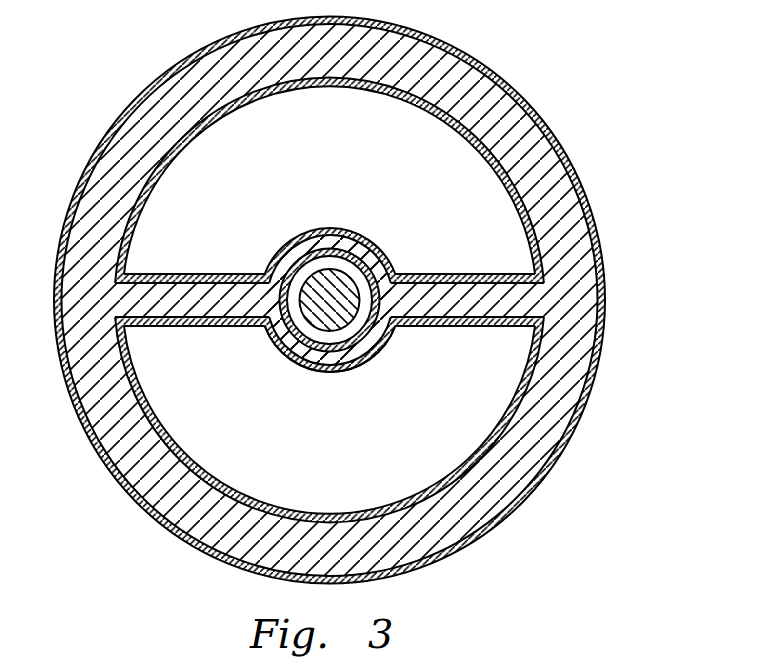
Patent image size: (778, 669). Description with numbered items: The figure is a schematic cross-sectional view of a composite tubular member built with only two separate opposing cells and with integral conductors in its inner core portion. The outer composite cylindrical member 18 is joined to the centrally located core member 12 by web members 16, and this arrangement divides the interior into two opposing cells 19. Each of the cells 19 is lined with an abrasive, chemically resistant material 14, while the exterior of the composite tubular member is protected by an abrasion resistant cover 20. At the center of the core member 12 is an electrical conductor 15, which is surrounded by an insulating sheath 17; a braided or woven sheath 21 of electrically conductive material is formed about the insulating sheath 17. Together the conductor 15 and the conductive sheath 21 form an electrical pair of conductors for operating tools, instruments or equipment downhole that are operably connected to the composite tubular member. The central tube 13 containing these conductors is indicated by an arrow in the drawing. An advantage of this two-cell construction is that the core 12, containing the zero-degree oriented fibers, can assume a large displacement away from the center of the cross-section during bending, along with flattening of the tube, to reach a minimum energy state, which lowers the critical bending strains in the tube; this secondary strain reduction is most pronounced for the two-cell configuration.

The core member 12 is at (372, 268).
The central tube 13 is at (367, 369).
The abrasive, chemically resistant material 14 is at (428, 107).
The electrical conductor 15 is at (300, 368).
The web members 16 is at (187, 273).
The insulating sheath 17 is at (288, 233).
The outer composite cylindrical member 18 is at (600, 239).
The opposing cells 19 is at (338, 166).
The abrasion resistant cover 20 is at (553, 129).
The braided or woven sheath 21 is at (347, 229).